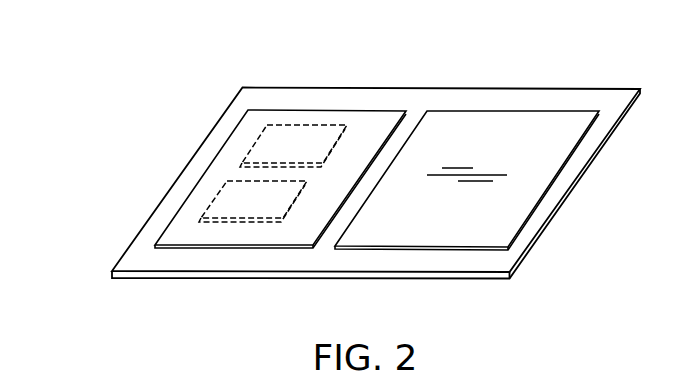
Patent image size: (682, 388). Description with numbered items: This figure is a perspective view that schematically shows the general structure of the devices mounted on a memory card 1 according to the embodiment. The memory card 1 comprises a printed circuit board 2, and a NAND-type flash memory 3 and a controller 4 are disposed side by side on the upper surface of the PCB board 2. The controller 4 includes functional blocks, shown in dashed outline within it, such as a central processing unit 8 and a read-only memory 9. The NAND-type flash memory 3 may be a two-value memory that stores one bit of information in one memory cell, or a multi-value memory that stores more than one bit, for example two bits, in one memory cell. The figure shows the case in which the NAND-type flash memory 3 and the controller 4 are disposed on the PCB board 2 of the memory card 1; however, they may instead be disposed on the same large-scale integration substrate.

The memory card 1 is at (594, 230).
The printed circuit board 2 is at (583, 98).
The NAND-type flash memory 3 is at (455, 237).
The controller 4 is at (215, 235).
The central processing unit 8 is at (218, 197).
The read-only memory 9 is at (257, 142).